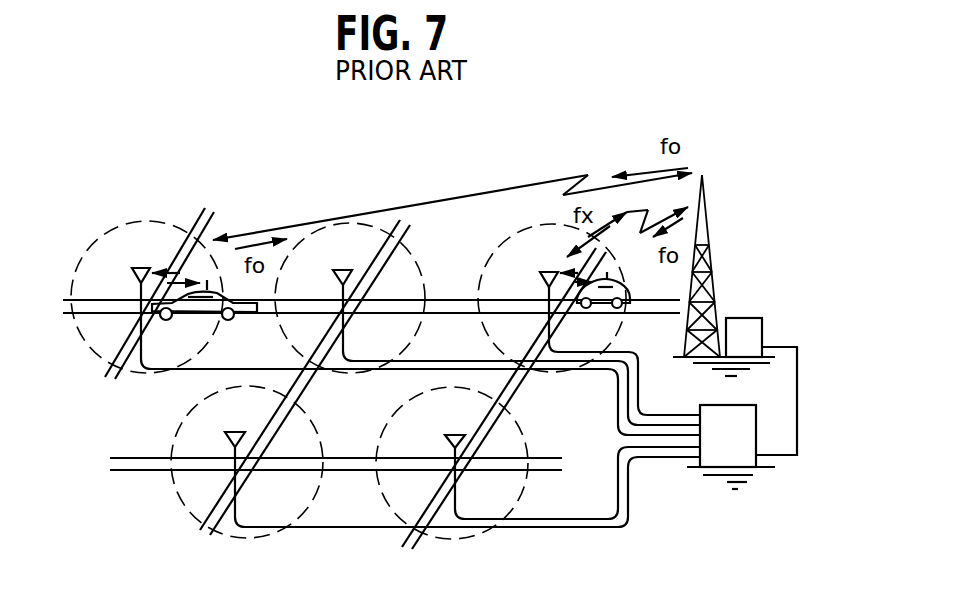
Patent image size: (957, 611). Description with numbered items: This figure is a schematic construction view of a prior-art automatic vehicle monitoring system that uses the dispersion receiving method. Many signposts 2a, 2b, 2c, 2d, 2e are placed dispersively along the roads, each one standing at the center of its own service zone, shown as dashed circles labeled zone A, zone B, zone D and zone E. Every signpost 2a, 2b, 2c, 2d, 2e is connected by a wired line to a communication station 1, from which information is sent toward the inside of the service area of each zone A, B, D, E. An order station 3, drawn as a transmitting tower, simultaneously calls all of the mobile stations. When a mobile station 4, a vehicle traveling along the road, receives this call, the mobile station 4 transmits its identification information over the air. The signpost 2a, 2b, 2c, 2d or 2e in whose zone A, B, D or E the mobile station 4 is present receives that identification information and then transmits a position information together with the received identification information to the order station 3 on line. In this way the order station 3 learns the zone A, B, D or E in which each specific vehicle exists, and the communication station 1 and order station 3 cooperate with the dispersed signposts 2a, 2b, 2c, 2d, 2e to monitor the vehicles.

The communication station 1 is at (712, 453).
The signpost 2a is at (138, 333).
The signpost 2b is at (356, 364).
The signpost 2c is at (556, 354).
The signpost 2d is at (268, 526).
The signpost 2e is at (490, 528).
The order station 3 is at (718, 357).
The mobile station 4 is at (233, 318).
The zone A is at (120, 224).
The zone B is at (420, 263).
The zone D is at (172, 487).
The zone E is at (378, 485).